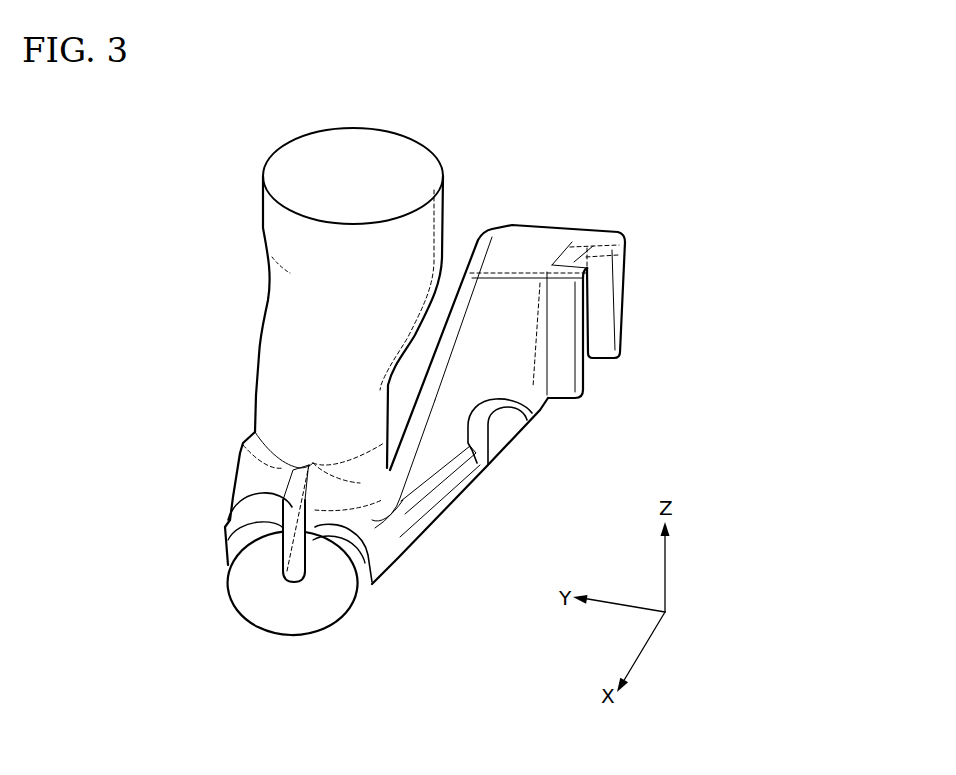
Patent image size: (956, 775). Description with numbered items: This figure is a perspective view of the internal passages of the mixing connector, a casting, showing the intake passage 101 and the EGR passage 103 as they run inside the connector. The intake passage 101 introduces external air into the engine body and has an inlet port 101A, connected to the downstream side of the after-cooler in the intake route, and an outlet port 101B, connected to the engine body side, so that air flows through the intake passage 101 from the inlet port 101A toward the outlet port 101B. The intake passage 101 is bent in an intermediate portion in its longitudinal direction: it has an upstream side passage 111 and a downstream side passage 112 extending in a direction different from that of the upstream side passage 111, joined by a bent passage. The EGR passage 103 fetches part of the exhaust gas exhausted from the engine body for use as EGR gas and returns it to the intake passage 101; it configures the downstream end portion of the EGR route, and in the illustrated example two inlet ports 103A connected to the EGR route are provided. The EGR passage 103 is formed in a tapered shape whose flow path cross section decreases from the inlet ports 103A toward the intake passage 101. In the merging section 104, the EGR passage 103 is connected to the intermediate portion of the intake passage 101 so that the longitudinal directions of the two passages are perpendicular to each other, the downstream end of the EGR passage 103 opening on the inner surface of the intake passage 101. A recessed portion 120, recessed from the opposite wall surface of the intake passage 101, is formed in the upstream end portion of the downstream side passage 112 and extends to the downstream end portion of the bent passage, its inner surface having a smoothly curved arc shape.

The intake passage 101 is at (258, 320).
The inlet port 101A is at (393, 150).
The outlet port 101B is at (278, 610).
The upstream side passage 111 is at (280, 378).
The downstream side passage 112 is at (228, 576).
The recessed portion 120 is at (227, 535).
The EGR passage 103 is at (514, 454).
The inlet port 103A is at (618, 315).
The merging section 104 is at (380, 586).